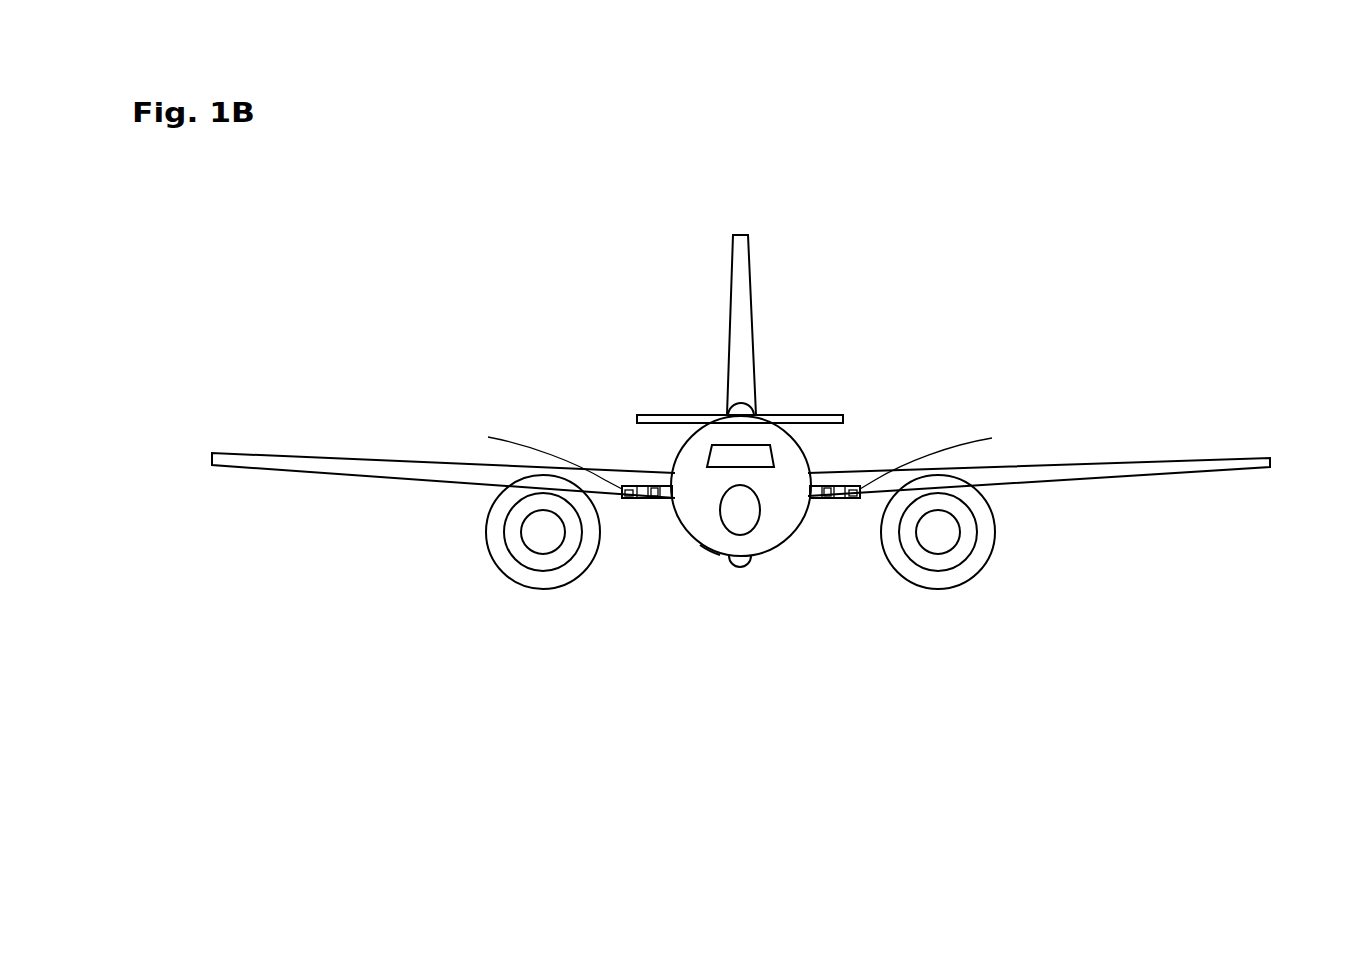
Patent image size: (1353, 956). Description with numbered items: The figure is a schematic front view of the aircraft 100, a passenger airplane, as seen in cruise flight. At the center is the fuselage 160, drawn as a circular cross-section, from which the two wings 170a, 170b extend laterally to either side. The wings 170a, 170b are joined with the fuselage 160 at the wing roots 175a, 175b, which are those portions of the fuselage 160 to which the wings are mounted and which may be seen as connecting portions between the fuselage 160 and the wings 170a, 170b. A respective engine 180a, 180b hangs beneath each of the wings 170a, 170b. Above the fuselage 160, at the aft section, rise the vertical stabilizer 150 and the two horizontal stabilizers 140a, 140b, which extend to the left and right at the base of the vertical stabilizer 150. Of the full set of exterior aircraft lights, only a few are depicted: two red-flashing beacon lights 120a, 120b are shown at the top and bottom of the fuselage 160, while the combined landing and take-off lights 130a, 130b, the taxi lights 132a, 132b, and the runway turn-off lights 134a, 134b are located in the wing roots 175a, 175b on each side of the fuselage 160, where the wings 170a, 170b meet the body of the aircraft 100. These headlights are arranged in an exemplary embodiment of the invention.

The aircraft 100 is at (1052, 252).
The vertical stabilizer 150 is at (740, 268).
The red-flashing beacon light 120a is at (741, 410).
The red-flashing beacon light 120b is at (744, 568).
The horizontal stabilizer 140a is at (621, 413).
The horizontal stabilizer 140b is at (859, 413).
The wing 170a is at (322, 432).
The wing 170b is at (1160, 430).
The taxi light 132a is at (648, 486).
The taxi light 132b is at (834, 486).
The runway turn-off light 134a is at (526, 450).
The runway turn-off light 134b is at (956, 450).
The combined landing and take-off light 130a is at (665, 499).
The combined landing and take-off light 130b is at (815, 499).
The wing root 175a is at (626, 522).
The wing root 175b is at (854, 522).
The engine 180a is at (473, 556).
The engine 180b is at (1006, 558).
The fuselage 160 is at (704, 570).